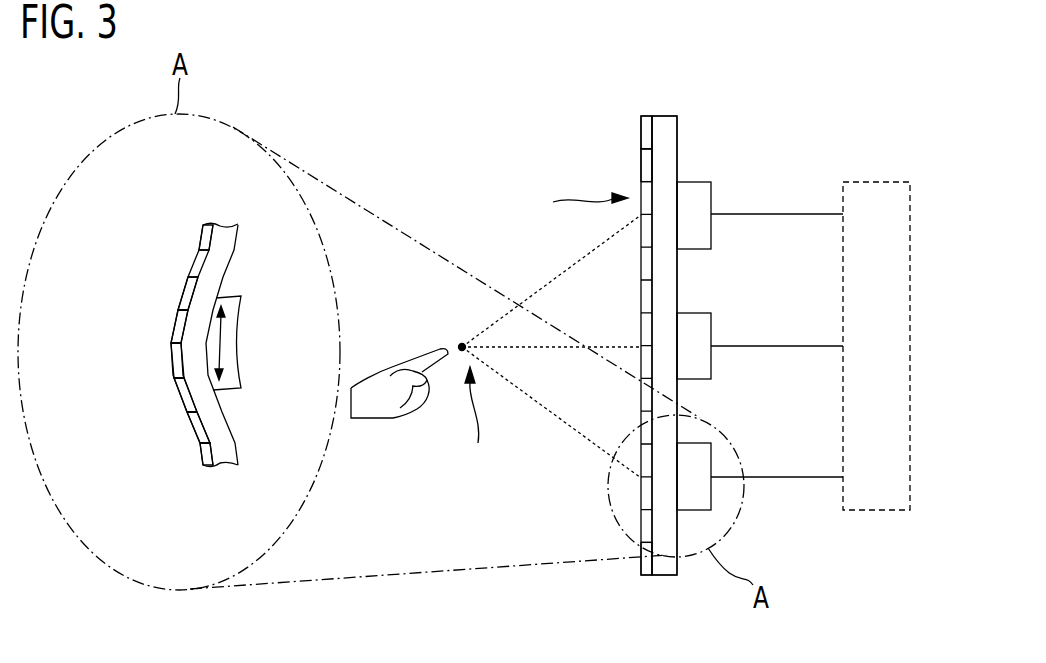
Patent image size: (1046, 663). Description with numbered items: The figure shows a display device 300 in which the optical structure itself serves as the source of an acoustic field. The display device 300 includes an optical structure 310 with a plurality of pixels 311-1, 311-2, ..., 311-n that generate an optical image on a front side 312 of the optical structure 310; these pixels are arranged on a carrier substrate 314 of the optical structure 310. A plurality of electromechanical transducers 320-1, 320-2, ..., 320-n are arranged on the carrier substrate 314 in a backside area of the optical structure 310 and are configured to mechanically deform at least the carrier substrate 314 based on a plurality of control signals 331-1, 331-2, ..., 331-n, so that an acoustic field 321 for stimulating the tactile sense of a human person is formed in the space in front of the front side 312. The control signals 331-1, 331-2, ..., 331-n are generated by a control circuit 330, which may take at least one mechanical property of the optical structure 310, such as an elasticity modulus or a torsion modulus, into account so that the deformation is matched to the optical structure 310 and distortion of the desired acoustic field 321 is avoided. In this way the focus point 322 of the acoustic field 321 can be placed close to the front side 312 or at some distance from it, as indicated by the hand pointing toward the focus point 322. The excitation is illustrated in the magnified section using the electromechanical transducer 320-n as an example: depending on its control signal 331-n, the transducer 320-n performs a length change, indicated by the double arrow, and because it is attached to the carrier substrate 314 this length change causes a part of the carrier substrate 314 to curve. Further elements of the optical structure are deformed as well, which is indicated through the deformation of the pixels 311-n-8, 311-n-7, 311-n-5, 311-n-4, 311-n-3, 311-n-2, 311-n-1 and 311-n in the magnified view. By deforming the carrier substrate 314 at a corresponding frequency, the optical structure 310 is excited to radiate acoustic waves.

The display device 300 is at (395, 649).
The optical structure 310 is at (662, 115).
The pixel 311-1 is at (642, 128).
The pixel 311-2 is at (642, 167).
The pixel 311-n is at (650, 577).
The pixel 311-n-1 is at (200, 430).
The pixel 311-n-2 is at (175, 400).
The pixel 311-n-3 is at (170, 363).
The pixel 311-n-4 is at (173, 323).
The pixel 311-n-5 is at (178, 303).
The pixel 311-n-7 is at (195, 263).
The pixel 311-n-8 is at (202, 233).
The front side 312 is at (567, 202).
The carrier substrate 314 is at (662, 157).
The electromechanical transducer 320-1 is at (713, 197).
The electromechanical transducer 320-2 is at (712, 332).
The electromechanical transducer 320-n is at (712, 462).
The acoustic field 321 is at (424, 416).
The focus point 322 is at (458, 344).
The control circuit 330 is at (878, 180).
The control signal 331-1 is at (793, 217).
The control signal 331-2 is at (793, 349).
The control signal 331-n is at (793, 481).